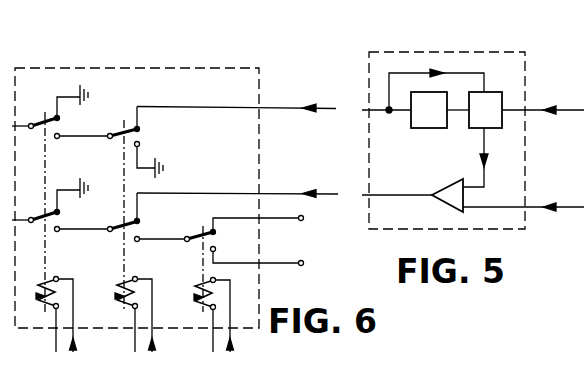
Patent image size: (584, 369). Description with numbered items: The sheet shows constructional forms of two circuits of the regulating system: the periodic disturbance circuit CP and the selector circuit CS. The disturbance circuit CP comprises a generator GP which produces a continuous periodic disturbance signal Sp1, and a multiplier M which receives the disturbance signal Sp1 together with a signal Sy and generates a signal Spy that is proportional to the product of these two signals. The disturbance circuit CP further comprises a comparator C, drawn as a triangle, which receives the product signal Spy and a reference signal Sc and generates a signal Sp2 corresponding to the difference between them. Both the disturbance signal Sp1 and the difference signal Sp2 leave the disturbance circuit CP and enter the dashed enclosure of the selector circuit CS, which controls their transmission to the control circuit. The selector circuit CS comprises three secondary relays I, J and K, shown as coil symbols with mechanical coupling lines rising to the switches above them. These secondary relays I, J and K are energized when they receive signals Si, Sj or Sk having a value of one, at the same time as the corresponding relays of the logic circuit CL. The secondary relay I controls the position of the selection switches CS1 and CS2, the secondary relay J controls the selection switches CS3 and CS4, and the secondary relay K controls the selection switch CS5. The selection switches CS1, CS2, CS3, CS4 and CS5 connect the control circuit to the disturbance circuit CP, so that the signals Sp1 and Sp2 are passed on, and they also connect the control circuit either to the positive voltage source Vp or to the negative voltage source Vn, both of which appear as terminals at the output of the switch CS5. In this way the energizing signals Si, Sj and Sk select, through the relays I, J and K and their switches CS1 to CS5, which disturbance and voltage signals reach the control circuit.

In FIG. 6, the selector circuit CS is at (138, 68).
In FIG. 6, the selection switch CS1 is at (60, 112).
In FIG. 6, the selection switch CS2 is at (60, 205).
In FIG. 6, the selection switch CS3 is at (142, 143).
In FIG. 6, the selection switch CS4 is at (147, 217).
In FIG. 6, the selection switch CS5 is at (244, 241).
In FIG. 6, the secondary relay I is at (49, 315).
In FIG. 6, the secondary relay J is at (125, 315).
In FIG. 6, the secondary relay K is at (204, 315).
In FIG. 6, the continuous periodic disturbance signal Sp1 is at (236, 98).
In FIG. 6, the difference signal Sp2 is at (237, 183).
In FIG. 6, the positive voltage source Vp is at (318, 223).
In FIG. 6, the negative voltage source Vn is at (318, 267).
In FIG. 6, the relay energizing signal Si is at (86, 350).
In FIG. 6, the relay energizing signal Sj is at (165, 350).
In FIG. 6, the relay energizing signal Sk is at (244, 350).
In FIG. 5, the periodic disturbance circuit CP is at (437, 52).
In FIG. 5, the generator GP is at (429, 110).
In FIG. 5, the multiplier M is at (485, 110).
In FIG. 5, the comparator C is at (440, 192).
In FIG. 5, the input signal Sy is at (543, 99).
In FIG. 5, the reference signal Sc is at (523, 196).
In FIG. 5, the product signal Spy is at (464, 157).
In FIG. 5, the logic circuit CL is at (498, 368).